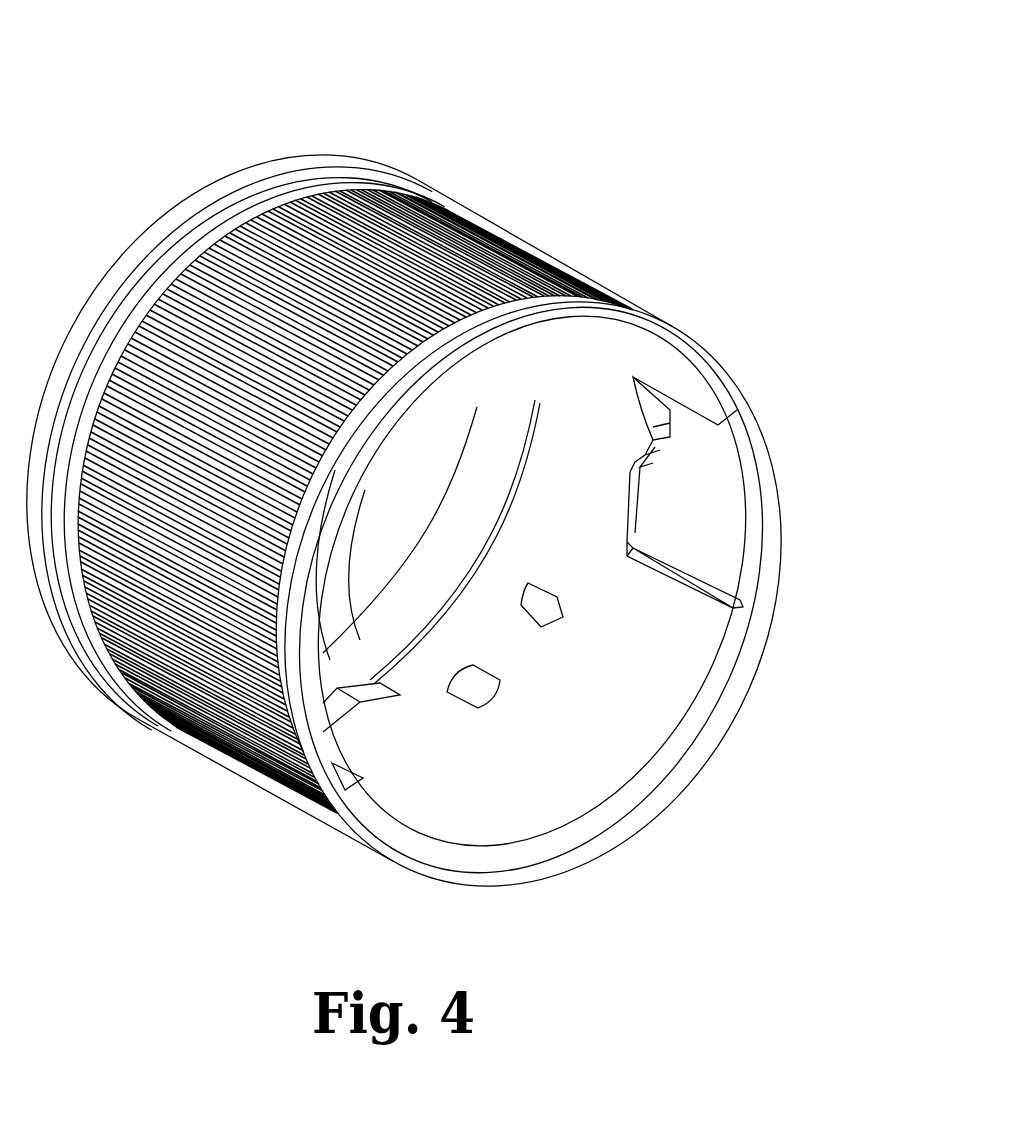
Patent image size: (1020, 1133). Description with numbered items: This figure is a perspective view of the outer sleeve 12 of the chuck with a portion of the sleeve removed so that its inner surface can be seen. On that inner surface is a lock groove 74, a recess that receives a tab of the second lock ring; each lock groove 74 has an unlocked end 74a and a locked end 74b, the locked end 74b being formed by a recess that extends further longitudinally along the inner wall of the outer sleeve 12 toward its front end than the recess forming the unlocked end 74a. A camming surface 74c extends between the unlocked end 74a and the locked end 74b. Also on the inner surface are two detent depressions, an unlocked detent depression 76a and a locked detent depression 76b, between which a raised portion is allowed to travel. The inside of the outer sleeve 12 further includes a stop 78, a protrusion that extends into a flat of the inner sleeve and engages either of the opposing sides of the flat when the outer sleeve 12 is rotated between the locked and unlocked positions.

The outer sleeve 12 is at (336, 118).
The lock groove 74 is at (733, 530).
The unlocked end 74a is at (655, 403).
The locked end 74b is at (635, 533).
The camming surface 74c is at (660, 447).
The unlocked detent depression 76a is at (550, 613).
The locked detent depression 76b is at (480, 695).
The stop 78 is at (361, 710).